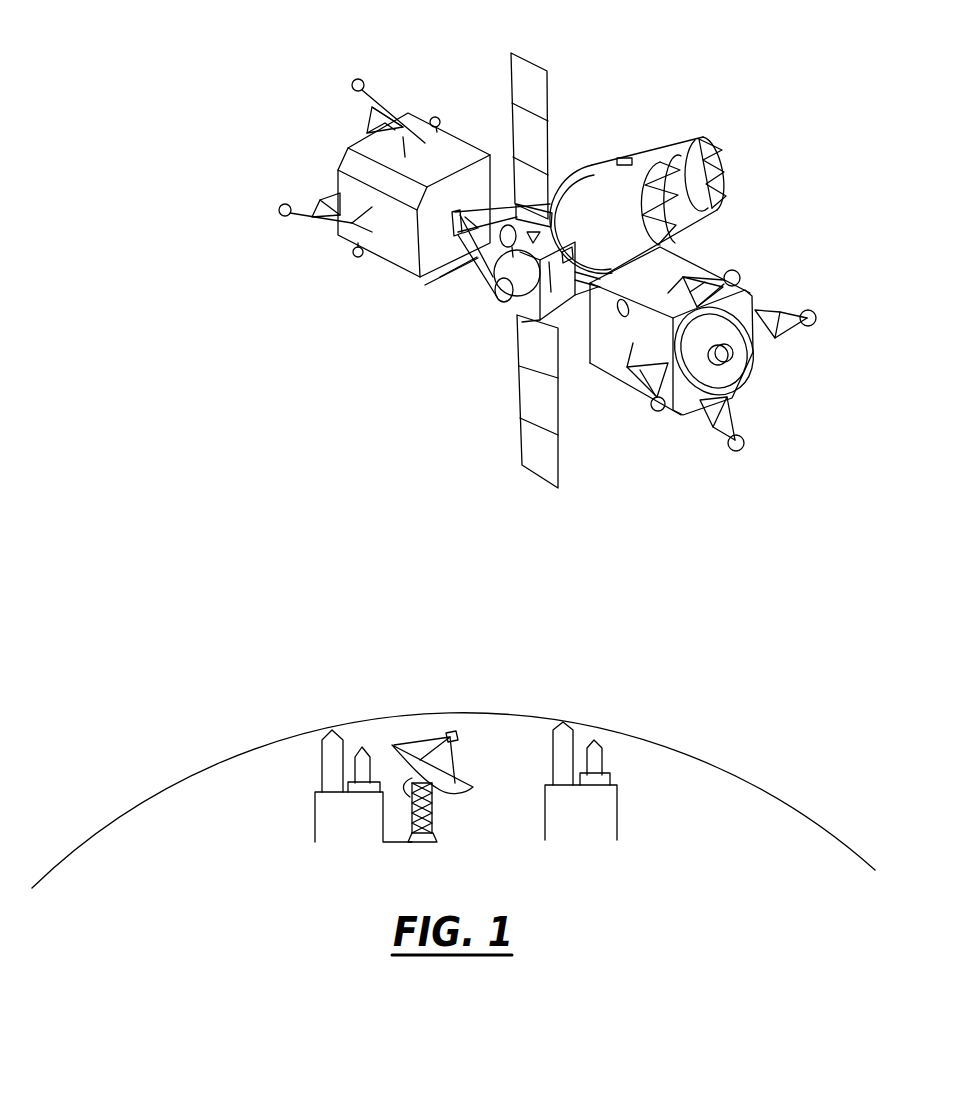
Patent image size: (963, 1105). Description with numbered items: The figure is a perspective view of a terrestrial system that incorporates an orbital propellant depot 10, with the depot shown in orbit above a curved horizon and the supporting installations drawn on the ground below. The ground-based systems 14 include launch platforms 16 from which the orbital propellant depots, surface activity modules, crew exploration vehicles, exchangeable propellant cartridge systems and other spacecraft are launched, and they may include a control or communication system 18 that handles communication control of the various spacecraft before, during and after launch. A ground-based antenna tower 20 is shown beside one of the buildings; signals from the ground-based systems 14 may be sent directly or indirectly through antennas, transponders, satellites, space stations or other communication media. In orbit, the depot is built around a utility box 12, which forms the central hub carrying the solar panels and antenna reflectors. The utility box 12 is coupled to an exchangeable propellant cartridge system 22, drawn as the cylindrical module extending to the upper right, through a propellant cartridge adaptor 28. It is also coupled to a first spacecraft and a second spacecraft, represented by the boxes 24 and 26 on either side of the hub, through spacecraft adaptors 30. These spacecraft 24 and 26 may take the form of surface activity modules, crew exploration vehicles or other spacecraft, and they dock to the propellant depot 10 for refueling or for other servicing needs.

The orbital propellant depot 10 is at (729, 47).
The utility box 12 is at (560, 306).
The ground-based systems 14 is at (605, 690).
The launch platforms 16 is at (376, 777).
The control or communication system 18 is at (390, 856).
The ground-based antenna tower 20 is at (432, 823).
The exchangeable propellant cartridge system 22 is at (618, 166).
The first spacecraft 24 is at (397, 262).
The second spacecraft 26 is at (640, 397).
The propellant cartridge adaptor 28 is at (513, 300).
The spacecraft adaptors 30 is at (462, 213).